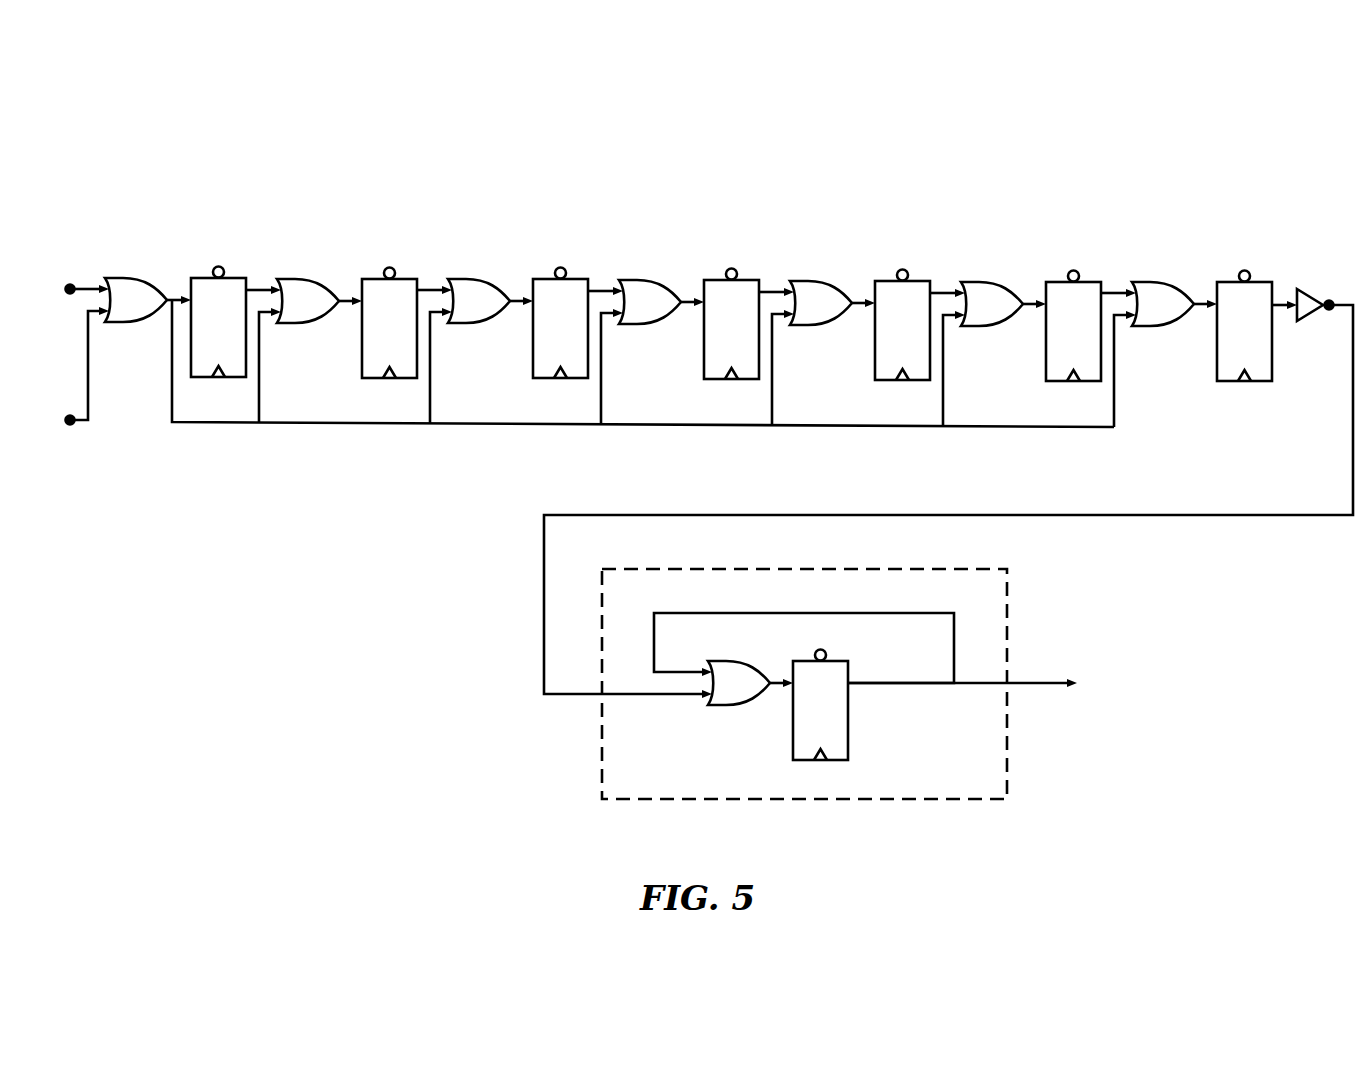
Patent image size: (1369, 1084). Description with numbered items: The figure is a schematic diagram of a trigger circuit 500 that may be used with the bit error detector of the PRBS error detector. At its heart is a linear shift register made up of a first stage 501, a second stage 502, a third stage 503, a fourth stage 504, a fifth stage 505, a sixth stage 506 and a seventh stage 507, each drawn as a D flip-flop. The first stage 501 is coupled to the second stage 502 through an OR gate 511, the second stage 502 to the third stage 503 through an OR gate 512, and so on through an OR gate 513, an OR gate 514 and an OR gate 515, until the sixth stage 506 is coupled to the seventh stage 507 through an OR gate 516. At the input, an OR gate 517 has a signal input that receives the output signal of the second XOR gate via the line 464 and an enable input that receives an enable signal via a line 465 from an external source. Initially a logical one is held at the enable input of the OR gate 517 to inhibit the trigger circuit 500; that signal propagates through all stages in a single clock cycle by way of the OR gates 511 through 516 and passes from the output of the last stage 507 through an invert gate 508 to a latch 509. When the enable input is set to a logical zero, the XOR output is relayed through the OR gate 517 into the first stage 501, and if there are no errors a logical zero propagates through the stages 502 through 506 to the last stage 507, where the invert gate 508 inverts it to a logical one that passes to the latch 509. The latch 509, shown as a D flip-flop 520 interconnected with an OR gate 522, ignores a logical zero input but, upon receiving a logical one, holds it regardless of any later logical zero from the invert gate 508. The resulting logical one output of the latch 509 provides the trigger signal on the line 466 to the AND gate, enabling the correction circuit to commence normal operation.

The trigger circuit 500 is at (508, 150).
The line 464 is at (86, 283).
The line 465 is at (88, 400).
The line 466 is at (1038, 683).
The first stage 501 is at (204, 285).
The second stage 502 is at (375, 286).
The third stage 503 is at (546, 286).
The fourth stage 504 is at (717, 287).
The fifth stage 505 is at (888, 288).
The sixth stage 506 is at (1059, 289).
The seventh stage 507 is at (1230, 289).
The invert gate 508 is at (1309, 290).
The latch 509 is at (860, 803).
The OR gate 511 is at (301, 286).
The OR gate 512 is at (472, 286).
The OR gate 513 is at (643, 287).
The OR gate 514 is at (814, 288).
The OR gate 515 is at (985, 289).
The OR gate 516 is at (1156, 289).
The OR gate 517 is at (129, 286).
The D flip-flop 520 is at (849, 722).
The OR gate 522 is at (745, 702).